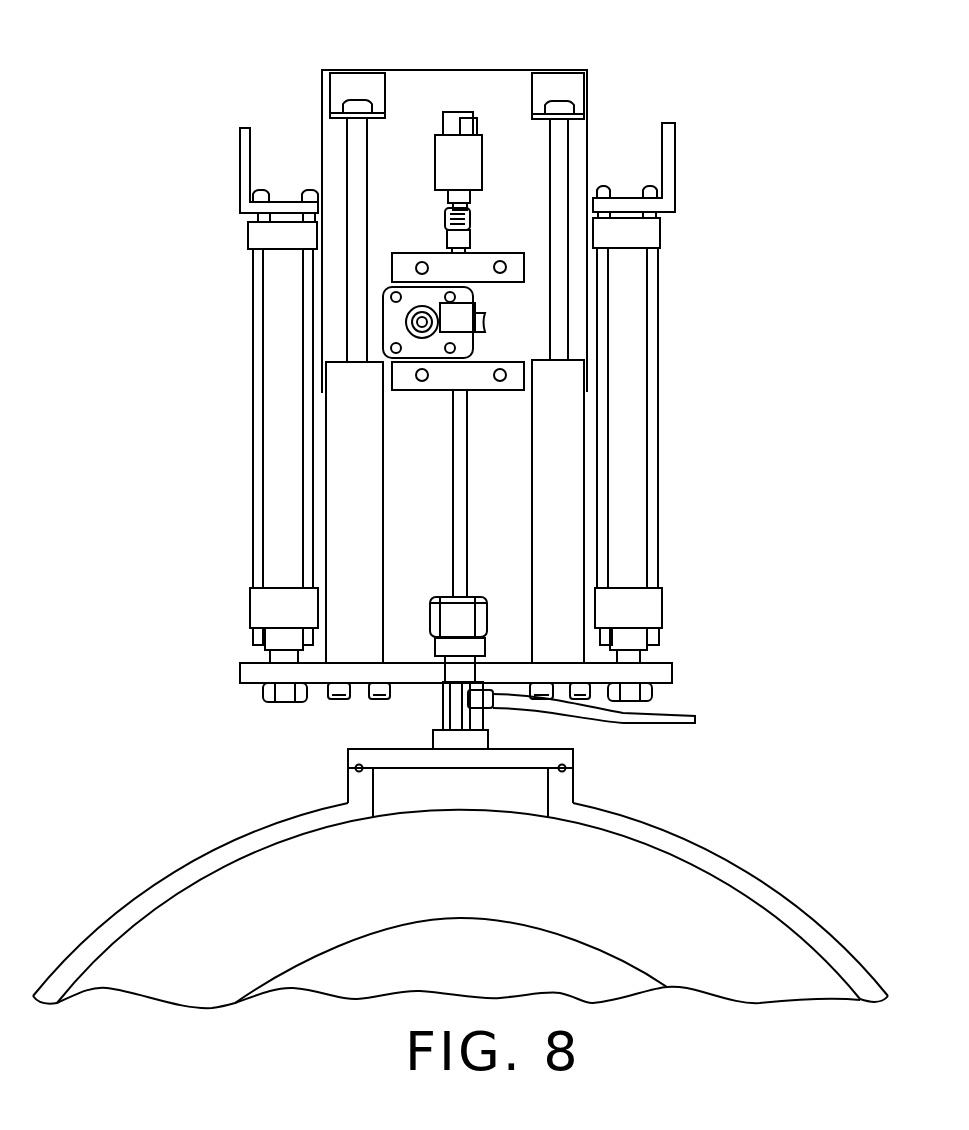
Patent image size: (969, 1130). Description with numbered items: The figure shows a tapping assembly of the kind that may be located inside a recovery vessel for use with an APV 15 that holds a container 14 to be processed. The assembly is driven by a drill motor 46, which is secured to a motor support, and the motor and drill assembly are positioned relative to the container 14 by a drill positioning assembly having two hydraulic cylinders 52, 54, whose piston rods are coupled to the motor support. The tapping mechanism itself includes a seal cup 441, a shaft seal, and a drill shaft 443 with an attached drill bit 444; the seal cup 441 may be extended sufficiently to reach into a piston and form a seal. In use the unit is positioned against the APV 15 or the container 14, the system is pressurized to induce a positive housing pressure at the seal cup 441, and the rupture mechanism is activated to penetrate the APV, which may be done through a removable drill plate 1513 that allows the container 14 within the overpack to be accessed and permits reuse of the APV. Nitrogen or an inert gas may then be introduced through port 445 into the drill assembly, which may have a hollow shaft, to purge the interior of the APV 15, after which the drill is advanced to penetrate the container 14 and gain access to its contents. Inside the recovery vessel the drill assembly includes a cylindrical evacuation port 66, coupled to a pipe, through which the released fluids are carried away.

The container 14 is at (570, 933).
The APV 15 is at (772, 886).
The drill motor 46 is at (383, 328).
The hydraulic cylinder 52 is at (279, 415).
The hydraulic cylinder 54 is at (583, 415).
The evacuation port 66 is at (702, 720).
The seal cup 441 is at (490, 709).
The drill shaft 443 is at (453, 450).
The drill bit 444 is at (443, 724).
The port 445 is at (468, 112).
The removable drill plate 1513 is at (433, 738).